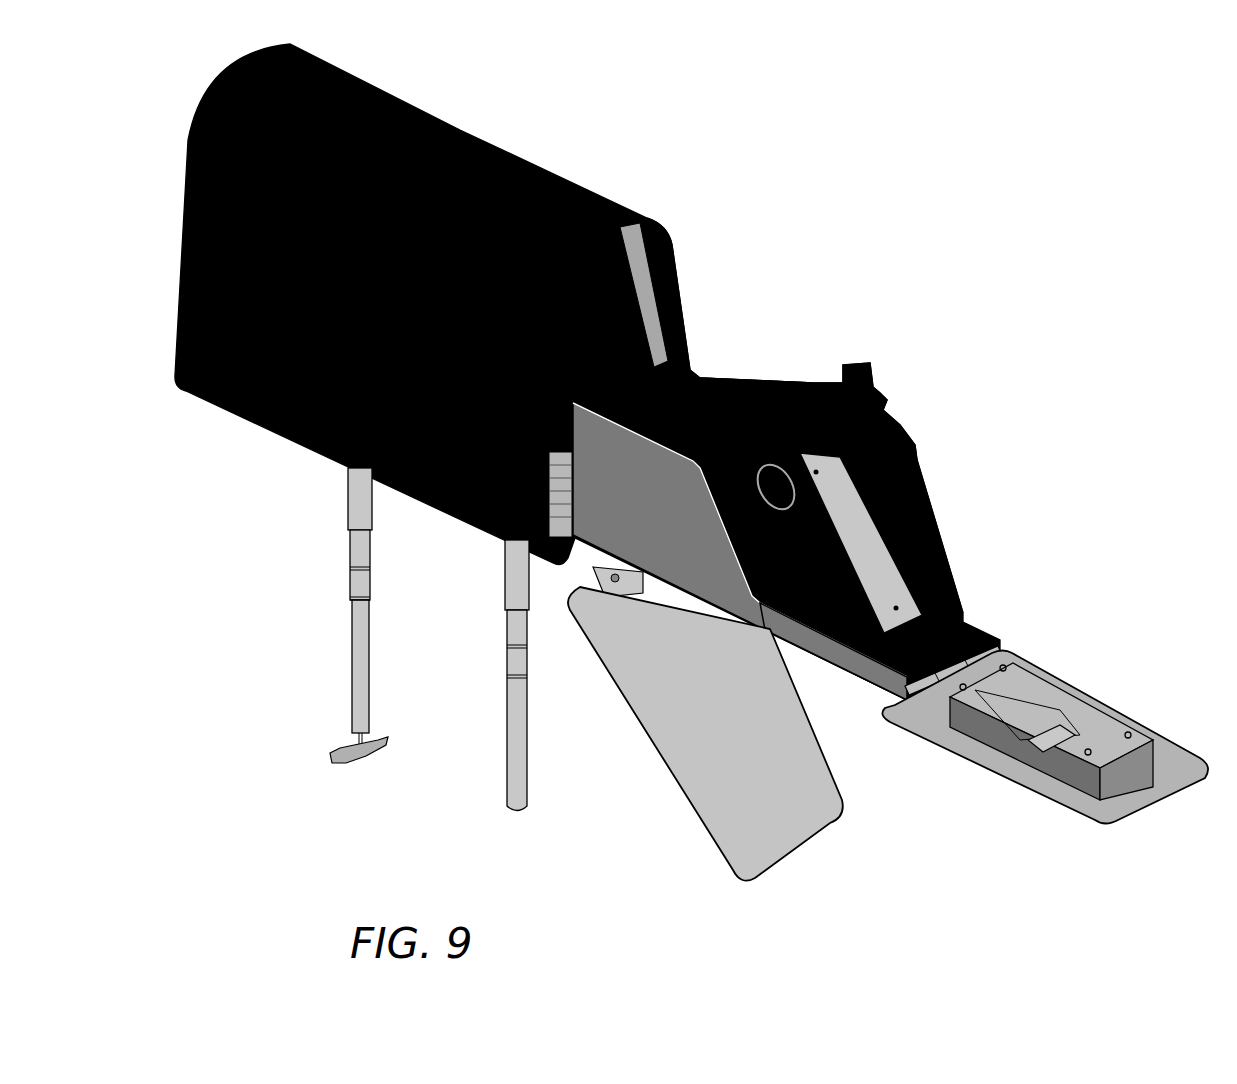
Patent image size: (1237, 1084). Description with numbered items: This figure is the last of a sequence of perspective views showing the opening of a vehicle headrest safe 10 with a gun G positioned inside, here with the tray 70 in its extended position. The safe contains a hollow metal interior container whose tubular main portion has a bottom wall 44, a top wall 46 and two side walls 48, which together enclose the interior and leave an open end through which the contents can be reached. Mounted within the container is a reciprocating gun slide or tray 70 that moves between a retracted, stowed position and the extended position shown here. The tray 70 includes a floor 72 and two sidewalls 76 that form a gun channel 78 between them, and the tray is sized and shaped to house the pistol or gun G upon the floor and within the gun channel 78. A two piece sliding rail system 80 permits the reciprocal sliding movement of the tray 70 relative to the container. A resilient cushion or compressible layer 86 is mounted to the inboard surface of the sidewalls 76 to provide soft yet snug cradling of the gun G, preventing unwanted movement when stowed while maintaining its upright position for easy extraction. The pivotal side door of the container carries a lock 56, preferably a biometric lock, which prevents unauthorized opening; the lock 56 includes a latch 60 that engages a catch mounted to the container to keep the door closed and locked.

The vehicle headrest safe 10 is at (617, 115).
The top wall 46 is at (663, 230).
The side walls 48 is at (677, 275).
The gun channel 78 is at (700, 377).
The resilient cushion 86 is at (655, 447).
The sidewalls 76 is at (678, 553).
The floor 72 is at (880, 670).
The gun G is at (897, 487).
The bottom wall 44 is at (568, 572).
The two piece sliding rail system 80 is at (528, 553).
The tray 70 is at (1010, 604).
The lock 56 is at (1132, 743).
The latch 60 is at (1060, 747).